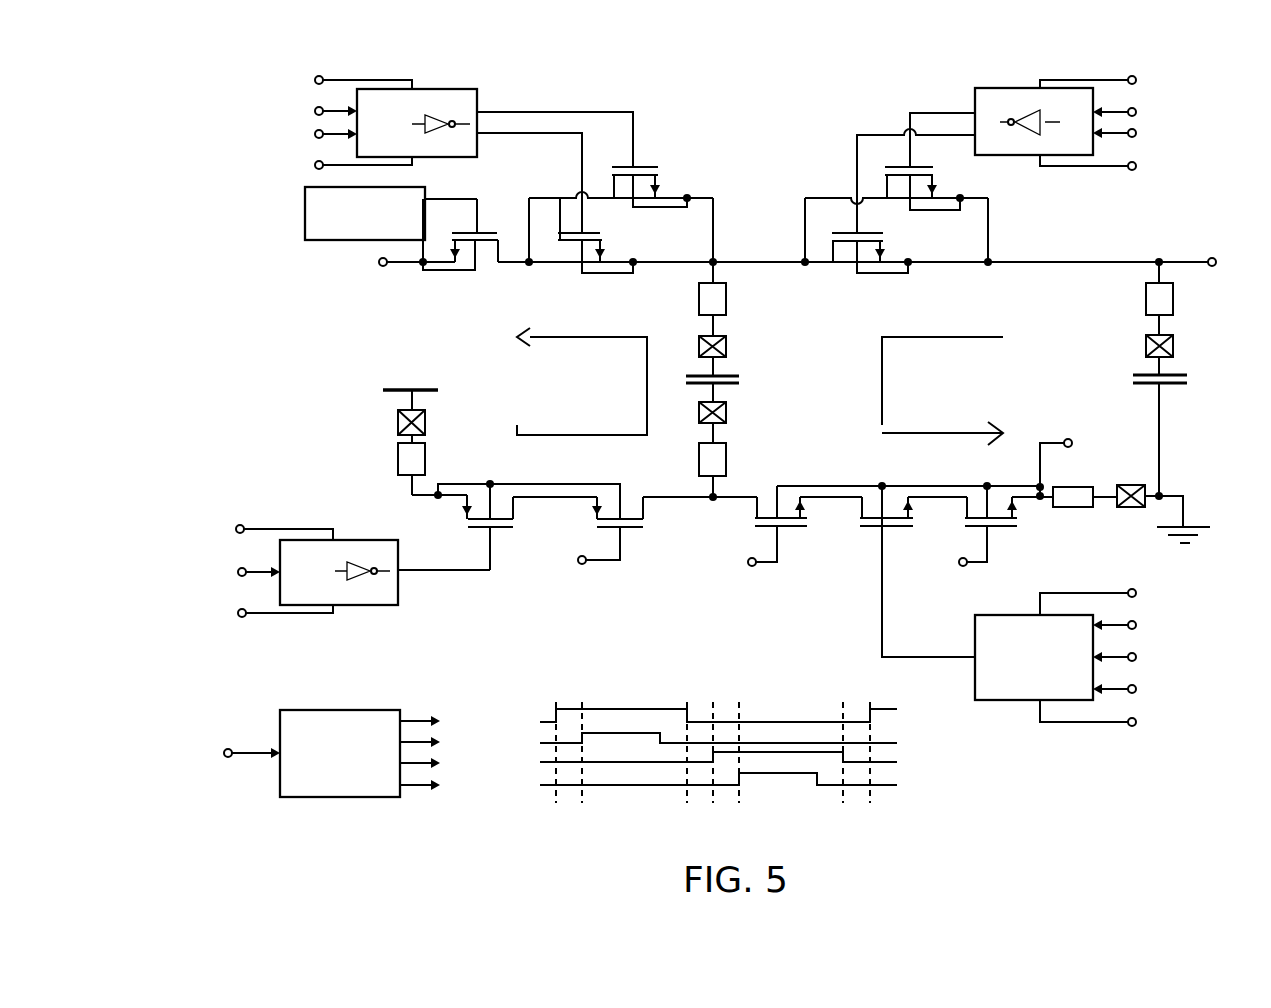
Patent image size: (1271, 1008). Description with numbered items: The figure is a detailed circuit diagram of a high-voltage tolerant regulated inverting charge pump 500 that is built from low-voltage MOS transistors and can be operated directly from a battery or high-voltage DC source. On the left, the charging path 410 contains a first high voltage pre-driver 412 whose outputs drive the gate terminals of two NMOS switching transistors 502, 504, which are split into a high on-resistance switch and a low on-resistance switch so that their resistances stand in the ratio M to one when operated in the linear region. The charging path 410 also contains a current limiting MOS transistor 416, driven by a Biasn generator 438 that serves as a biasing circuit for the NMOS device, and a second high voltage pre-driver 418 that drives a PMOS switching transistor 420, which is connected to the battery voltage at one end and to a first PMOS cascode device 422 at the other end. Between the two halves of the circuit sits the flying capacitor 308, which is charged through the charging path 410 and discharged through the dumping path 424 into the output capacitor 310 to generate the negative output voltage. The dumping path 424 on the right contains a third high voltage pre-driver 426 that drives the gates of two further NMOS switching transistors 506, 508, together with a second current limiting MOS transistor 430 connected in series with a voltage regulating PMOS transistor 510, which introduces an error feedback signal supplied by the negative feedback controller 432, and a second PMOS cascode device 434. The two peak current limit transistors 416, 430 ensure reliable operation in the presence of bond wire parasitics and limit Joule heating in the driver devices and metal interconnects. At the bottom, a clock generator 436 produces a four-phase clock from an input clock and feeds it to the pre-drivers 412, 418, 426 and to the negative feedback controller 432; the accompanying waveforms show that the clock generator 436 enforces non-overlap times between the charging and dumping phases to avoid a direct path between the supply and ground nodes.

The inverting charge pump 500 is at (240, 60).
The first high voltage pre-driver 412 is at (413, 88).
The third high voltage pre-driver 426 is at (992, 88).
The Biasn generator 438 is at (305, 212).
The current limiting MOS transistor device Mc1 416 is at (470, 240).
The MOS transistor Mcsw1 502 is at (645, 163).
The MOS transistor Mcsw2 504 is at (568, 231).
The MOS transistor Mdsw1 506 is at (903, 168).
The MOS transistor Mdsw2 508 is at (850, 240).
The flying capacitor 308 is at (720, 378).
The output capacitor 310 is at (1137, 382).
The charging path 410 is at (565, 426).
The dumping path 424 is at (947, 426).
The second high voltage pre-driver 418 is at (343, 540).
The MOS transistor device Mp 420 is at (495, 512).
The MOS transistor device Mcascp 422 is at (625, 530).
The cascode MOS transistor device 434 is at (778, 530).
The voltage regulating transistor Mreg 510 is at (873, 527).
The current limiting MOS transistor Md1 430 is at (990, 530).
The negative feedback controller 432 is at (998, 702).
The clock generator 436 is at (297, 710).